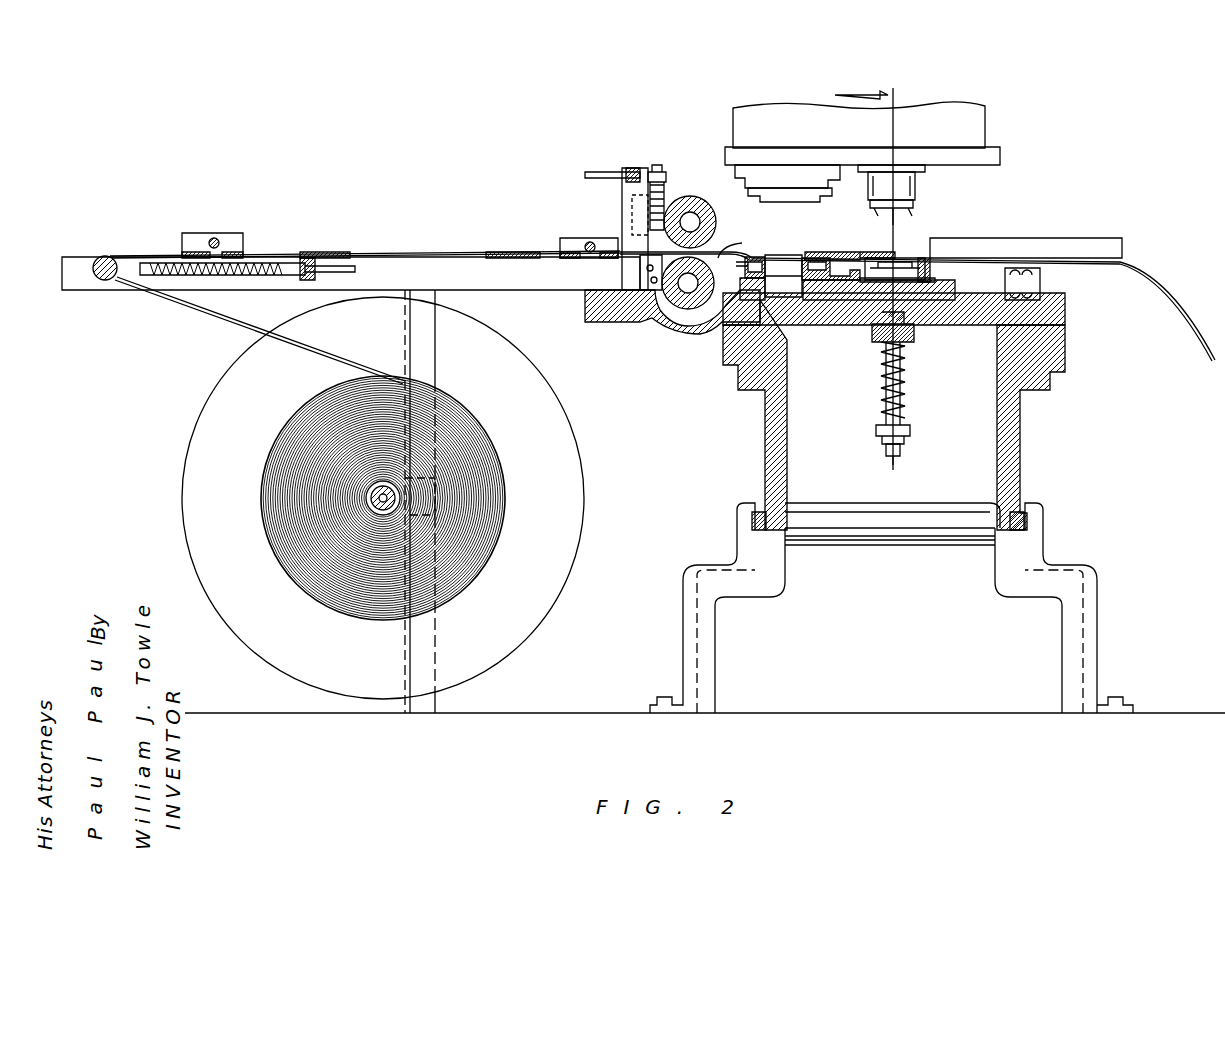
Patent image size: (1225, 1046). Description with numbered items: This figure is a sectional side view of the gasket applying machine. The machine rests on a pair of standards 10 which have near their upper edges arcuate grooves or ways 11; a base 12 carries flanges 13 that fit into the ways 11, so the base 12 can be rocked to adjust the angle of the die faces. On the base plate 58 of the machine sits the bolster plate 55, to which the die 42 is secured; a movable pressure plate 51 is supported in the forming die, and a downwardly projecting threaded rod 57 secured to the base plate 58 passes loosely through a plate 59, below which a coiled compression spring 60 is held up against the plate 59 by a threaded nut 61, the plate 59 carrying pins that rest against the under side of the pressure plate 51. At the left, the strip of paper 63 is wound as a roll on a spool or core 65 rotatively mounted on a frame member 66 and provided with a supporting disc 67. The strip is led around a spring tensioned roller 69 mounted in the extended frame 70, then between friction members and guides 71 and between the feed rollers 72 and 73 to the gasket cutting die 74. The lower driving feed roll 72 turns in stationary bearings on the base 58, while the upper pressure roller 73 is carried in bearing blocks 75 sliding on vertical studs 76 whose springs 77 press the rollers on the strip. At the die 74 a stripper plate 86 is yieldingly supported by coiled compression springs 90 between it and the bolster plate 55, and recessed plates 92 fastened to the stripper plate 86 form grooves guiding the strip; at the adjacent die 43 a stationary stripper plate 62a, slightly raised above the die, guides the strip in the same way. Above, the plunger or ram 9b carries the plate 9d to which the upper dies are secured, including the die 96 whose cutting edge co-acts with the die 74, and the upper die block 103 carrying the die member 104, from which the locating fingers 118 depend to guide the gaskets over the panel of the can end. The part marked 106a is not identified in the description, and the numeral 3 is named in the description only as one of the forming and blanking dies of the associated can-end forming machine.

The forming and blanking die 3 is at (876, 290).
The plunger or ram 9b is at (985, 120).
The plunger plate 9d is at (1000, 158).
The standards 10 is at (700, 635).
The grooves or ways 11 is at (752, 523).
The base 12 is at (1012, 450).
The flanges 13 is at (752, 528).
The die 42 is at (850, 305).
The die 43 is at (985, 226).
The movable pressure plate 51 is at (897, 270).
The bolster plate 55 is at (958, 296).
The threaded rod 57 is at (902, 450).
The base plate 58 is at (700, 320).
The plate 59 is at (916, 338).
The coiled compression spring 60 is at (905, 382).
The threaded nut 61 is at (910, 435).
The stationary stripper plate 62a is at (830, 250).
The strip of paper 63 is at (190, 302).
The spool or core 65 is at (375, 495).
The frame member 66 is at (425, 698).
The supporting disc 67 is at (545, 588).
The spring tensioned roller 69 is at (108, 256).
The extended frame 70 is at (92, 284).
The friction members and guides 71 is at (200, 240).
The lower driving feed roll 72 is at (680, 300).
The upper pressure roller 73 is at (690, 195).
The gasket cutting die 74 is at (780, 280).
The bearing blocks 75 is at (635, 222).
The vertical studs 76 is at (659, 162).
The springs 77 is at (645, 192).
The stripper plate 86 is at (752, 255).
The coiled compression springs 90 is at (736, 266).
The recessed plates 92 is at (722, 248).
The die 96 is at (810, 200).
The upper die block 103 is at (926, 170).
The die member 104 is at (916, 196).
The body 106a is at (772, 164).
The locating fingers 118 is at (912, 210).